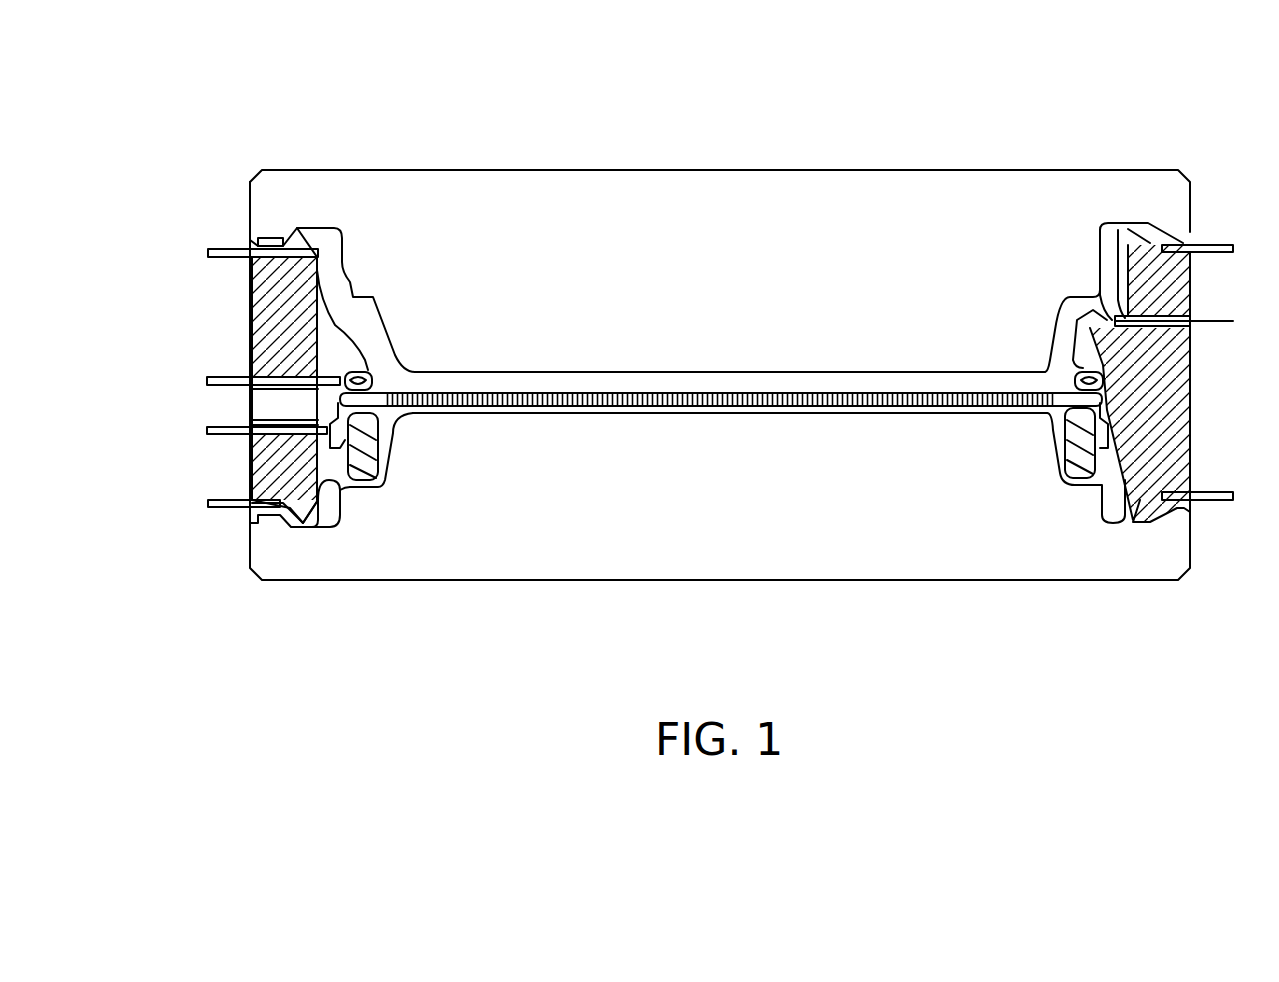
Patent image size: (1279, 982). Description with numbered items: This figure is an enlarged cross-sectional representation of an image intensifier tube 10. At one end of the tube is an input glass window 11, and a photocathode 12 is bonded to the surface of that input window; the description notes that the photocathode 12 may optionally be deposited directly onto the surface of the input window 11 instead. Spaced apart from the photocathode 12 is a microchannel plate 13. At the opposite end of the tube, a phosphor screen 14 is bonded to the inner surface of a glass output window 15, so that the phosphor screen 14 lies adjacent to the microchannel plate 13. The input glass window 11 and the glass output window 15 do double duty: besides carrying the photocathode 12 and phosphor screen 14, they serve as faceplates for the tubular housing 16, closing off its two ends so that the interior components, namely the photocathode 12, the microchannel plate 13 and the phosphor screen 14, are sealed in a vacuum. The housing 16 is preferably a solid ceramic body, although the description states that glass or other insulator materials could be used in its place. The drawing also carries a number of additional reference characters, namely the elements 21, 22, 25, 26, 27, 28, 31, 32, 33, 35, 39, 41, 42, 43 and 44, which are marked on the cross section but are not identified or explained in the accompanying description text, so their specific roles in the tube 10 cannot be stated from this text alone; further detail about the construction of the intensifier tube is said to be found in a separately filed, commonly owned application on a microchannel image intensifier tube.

The image intensifier tube 10 is at (272, 632).
The input glass window 11 is at (929, 580).
The photocathode 12 is at (652, 408).
The microchannel plate 13 is at (512, 392).
The phosphor screen 14 is at (600, 372).
The glass output window 15 is at (931, 170).
The tubular housing 16 is at (252, 278).
The lower section arrow 21 is at (786, 490).
The upper section arrow 22 is at (798, 240).
The pin 25 is at (222, 247).
The pin 26 is at (218, 377).
The pin 27 is at (207, 430).
The pin 28 is at (212, 498).
The right bump 31 is at (1100, 300).
The right pin 32 is at (1208, 320).
The right wall 33 is at (1055, 348).
The clip 35 is at (332, 412).
The left lower bump 39 is at (360, 492).
The notch 41 is at (289, 240).
The right lower bump 42 is at (1105, 518).
The right hatched block 43 is at (1138, 525).
The left upper bump 44 is at (313, 228).